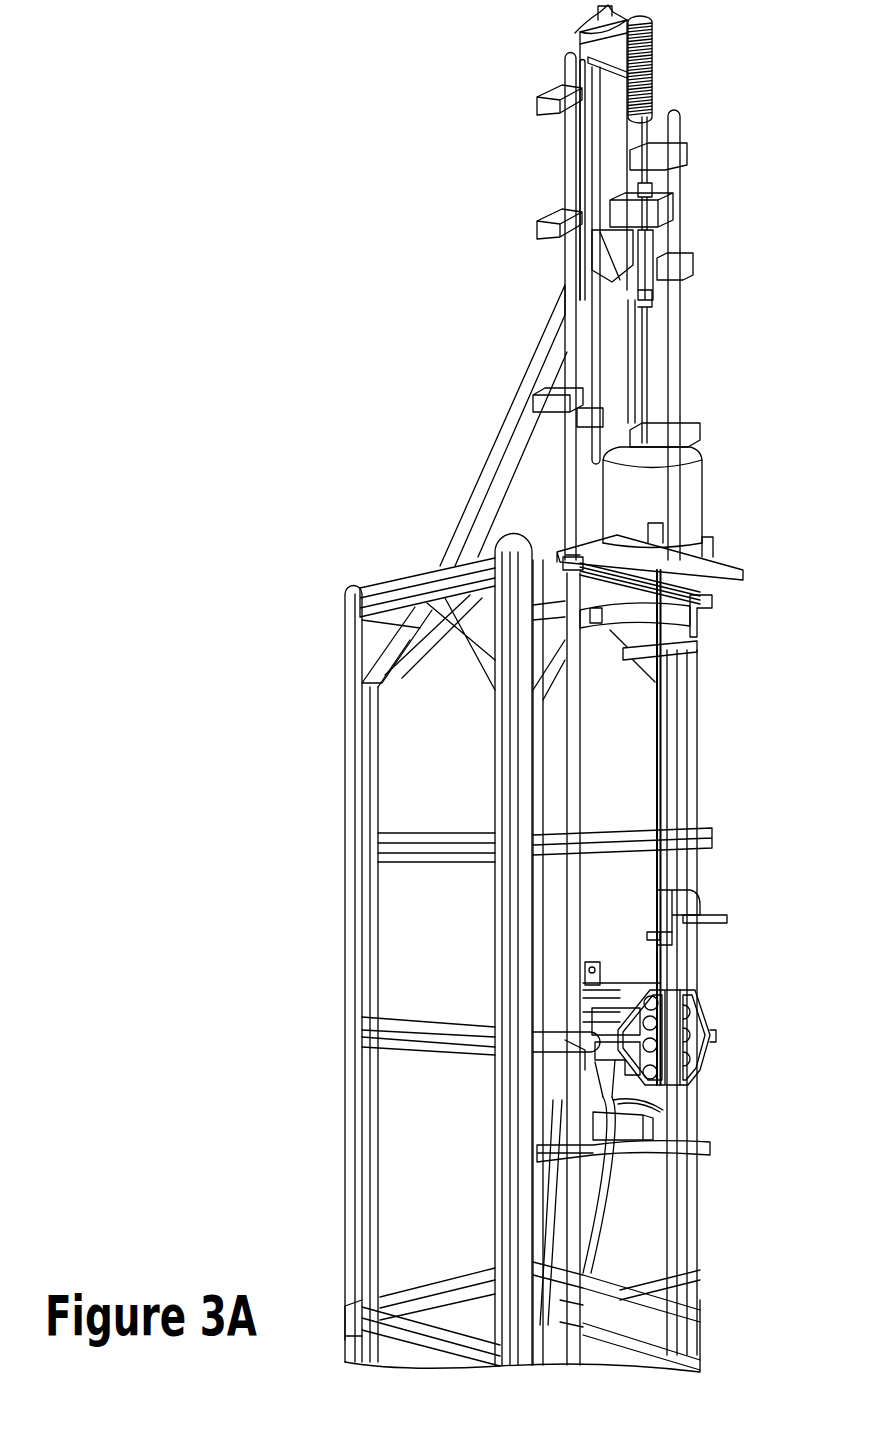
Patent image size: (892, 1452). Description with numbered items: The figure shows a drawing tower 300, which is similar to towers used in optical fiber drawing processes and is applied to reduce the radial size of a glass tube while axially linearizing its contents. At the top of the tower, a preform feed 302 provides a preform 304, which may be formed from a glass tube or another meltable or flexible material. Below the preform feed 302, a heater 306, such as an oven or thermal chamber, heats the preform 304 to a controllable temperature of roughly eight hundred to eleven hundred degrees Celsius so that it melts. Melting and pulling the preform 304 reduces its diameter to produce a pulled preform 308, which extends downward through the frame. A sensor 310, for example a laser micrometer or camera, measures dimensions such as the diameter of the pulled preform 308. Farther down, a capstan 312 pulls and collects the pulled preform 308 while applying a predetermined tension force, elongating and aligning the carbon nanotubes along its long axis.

The drawing tower 300 is at (760, 150).
The preform feed 302 is at (630, 62).
The preform 304 is at (648, 377).
The heater 306 is at (703, 488).
The pulled preform 308 is at (660, 748).
The sensor 310 is at (668, 935).
The capstan 312 is at (683, 987).